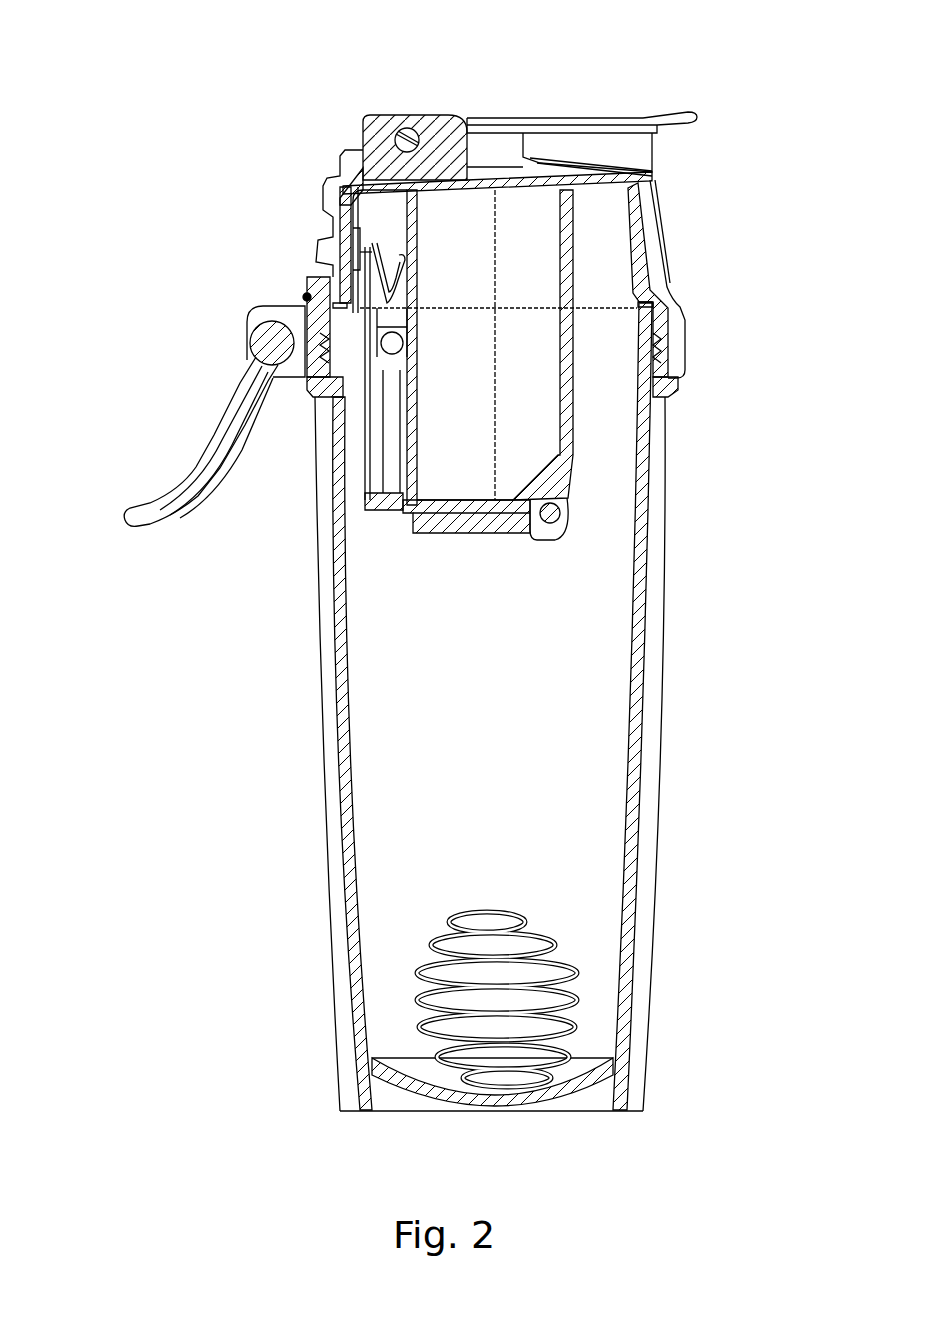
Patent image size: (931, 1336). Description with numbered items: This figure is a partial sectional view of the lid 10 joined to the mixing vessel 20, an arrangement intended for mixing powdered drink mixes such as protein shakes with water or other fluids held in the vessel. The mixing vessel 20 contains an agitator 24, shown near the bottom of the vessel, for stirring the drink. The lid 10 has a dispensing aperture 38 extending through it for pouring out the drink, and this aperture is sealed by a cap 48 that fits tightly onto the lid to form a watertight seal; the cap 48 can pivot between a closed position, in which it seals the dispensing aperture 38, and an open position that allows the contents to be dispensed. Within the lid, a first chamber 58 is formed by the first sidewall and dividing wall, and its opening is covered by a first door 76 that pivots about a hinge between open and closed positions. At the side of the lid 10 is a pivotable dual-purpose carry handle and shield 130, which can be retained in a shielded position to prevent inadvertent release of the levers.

The lid 10 is at (676, 245).
The mixing vessel 20 is at (680, 626).
The agitator 24 is at (573, 987).
The dispensing aperture 38 is at (595, 143).
The cap 48 is at (530, 118).
The first chamber 58 is at (443, 437).
The first door 76 is at (464, 527).
The carry handle and shield 130 is at (192, 448).